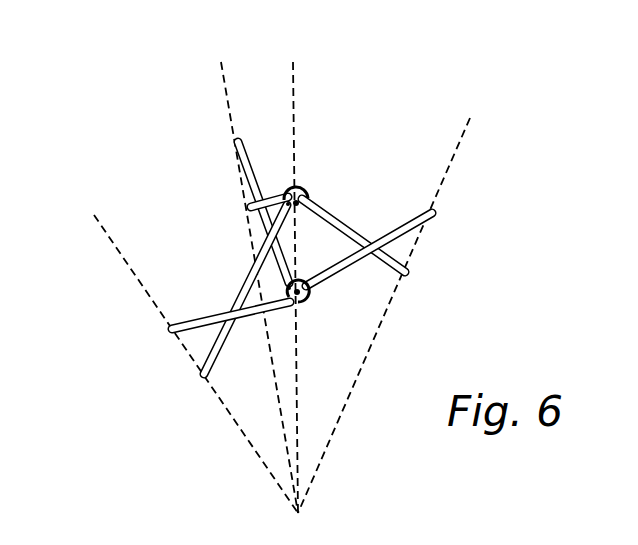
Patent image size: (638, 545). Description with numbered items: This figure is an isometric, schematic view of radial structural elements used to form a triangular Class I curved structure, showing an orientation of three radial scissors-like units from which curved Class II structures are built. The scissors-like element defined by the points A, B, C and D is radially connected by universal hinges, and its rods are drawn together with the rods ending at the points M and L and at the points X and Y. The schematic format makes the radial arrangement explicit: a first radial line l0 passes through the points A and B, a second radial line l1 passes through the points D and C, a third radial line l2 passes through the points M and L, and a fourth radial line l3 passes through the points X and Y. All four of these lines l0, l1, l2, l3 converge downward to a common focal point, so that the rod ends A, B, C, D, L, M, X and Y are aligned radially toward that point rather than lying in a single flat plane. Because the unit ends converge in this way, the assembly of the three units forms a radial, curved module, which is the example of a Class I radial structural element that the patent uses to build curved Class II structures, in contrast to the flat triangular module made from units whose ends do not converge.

The radial line l0 is at (292, 271).
The radial line l1 is at (392, 298).
The radial line l2 is at (251, 272).
The radial line l3 is at (183, 346).
The point A is at (305, 187).
The point B is at (307, 299).
The point C is at (362, 246).
The point D is at (380, 247).
The point L is at (258, 209).
The point M is at (250, 205).
The point X is at (220, 325).
The point Y is at (234, 304).